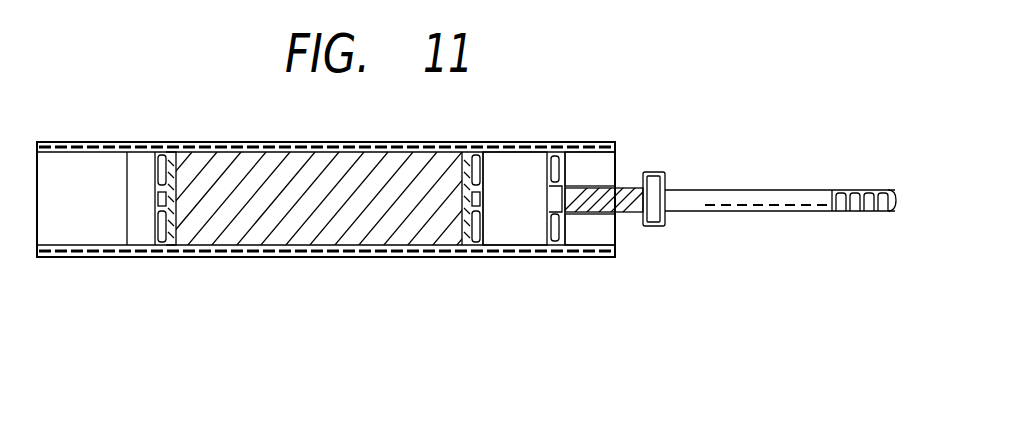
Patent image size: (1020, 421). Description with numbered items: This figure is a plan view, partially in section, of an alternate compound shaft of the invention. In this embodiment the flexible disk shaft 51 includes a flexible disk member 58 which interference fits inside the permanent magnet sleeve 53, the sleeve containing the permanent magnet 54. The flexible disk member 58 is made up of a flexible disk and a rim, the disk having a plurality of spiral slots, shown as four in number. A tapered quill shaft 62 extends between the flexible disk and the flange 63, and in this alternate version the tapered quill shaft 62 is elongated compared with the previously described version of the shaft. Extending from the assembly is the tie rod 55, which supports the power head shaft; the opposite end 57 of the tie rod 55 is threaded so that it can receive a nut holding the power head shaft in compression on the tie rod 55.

The flexible disk shaft 51 is at (637, 140).
The permanent magnet sleeve 53 is at (497, 257).
The permanent magnet 54 is at (288, 222).
The tie rod 55 is at (792, 212).
The opposite end 57 is at (868, 190).
The flexible disk member 58 is at (616, 236).
The tapered quill shaft 62 is at (636, 182).
The flange 63 is at (656, 228).